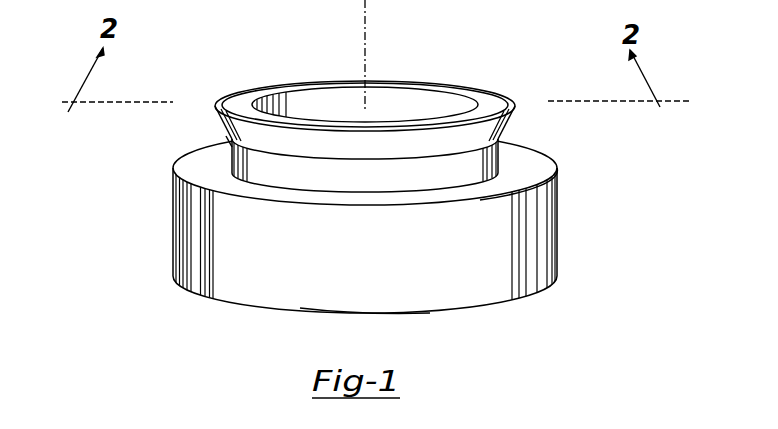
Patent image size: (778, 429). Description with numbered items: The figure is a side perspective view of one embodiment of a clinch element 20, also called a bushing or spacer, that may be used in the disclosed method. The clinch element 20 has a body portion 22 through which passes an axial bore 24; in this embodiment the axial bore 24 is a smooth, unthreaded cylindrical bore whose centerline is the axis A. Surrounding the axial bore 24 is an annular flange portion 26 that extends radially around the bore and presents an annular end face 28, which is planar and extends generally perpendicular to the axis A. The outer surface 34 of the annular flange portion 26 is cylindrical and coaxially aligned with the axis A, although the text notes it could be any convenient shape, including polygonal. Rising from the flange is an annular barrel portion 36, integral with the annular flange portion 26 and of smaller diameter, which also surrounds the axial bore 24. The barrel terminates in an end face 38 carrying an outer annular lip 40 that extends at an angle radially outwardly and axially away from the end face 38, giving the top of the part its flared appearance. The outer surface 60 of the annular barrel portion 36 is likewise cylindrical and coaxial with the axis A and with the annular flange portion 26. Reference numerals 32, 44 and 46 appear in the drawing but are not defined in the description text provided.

The clinch element 20 is at (345, 195).
The body portion 22 is at (398, 230).
The axial bore 24 is at (318, 111).
The annular flange portion 26 is at (533, 224).
The annular end face 28 is at (523, 162).
The bottom edge 32 is at (437, 313).
The outer surface 34 is at (463, 300).
The annular barrel portion 36 is at (400, 178).
The end face 38 is at (244, 108).
The outer annular lip 40 is at (400, 135).
The rim top surface 44 is at (446, 86).
The flared wall 46 is at (362, 148).
The outer surface 60 is at (232, 147).
The axis A is at (368, 38).